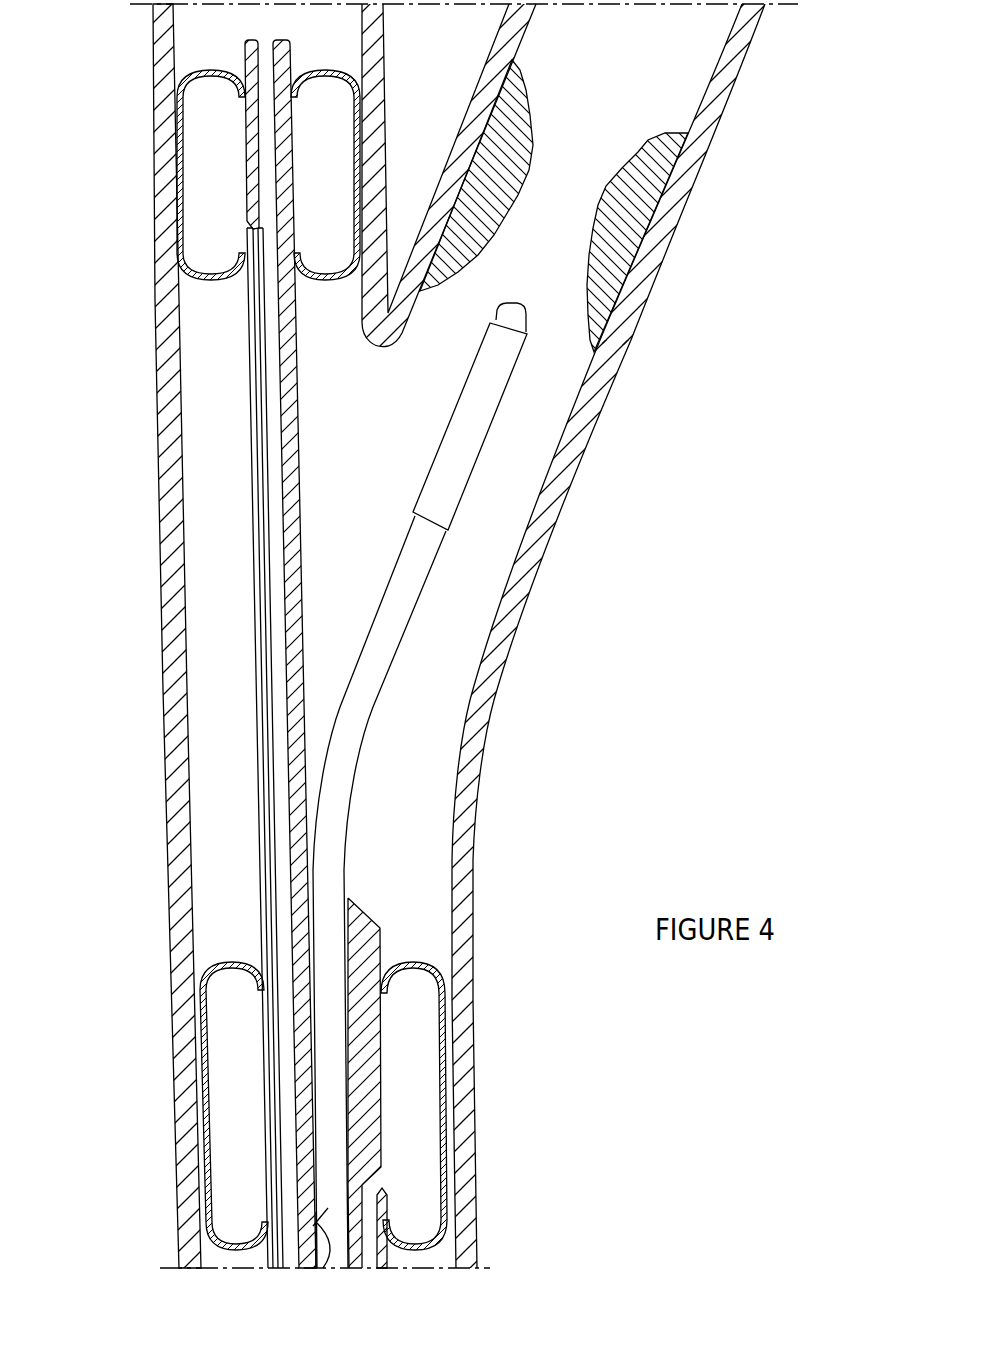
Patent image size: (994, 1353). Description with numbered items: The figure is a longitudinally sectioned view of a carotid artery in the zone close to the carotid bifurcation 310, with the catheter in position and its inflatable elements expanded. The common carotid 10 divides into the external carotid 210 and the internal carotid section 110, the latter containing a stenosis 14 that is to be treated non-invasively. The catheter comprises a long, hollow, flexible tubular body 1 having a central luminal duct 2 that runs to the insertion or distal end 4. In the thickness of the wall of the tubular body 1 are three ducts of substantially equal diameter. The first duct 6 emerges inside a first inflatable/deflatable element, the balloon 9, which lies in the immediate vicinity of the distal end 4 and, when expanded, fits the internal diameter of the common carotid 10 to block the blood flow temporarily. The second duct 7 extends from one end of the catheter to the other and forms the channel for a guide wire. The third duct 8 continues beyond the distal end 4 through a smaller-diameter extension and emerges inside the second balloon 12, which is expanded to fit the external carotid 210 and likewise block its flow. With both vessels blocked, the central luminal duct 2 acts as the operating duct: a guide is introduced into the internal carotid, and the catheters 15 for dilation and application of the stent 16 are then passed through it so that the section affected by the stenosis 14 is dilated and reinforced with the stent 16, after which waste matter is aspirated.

The tubular body 1 is at (390, 1257).
The central luminal duct 2 is at (327, 1268).
The distal end 4 is at (358, 910).
The first duct 6 is at (367, 1250).
The second duct 7 is at (267, 60).
The third duct 8 is at (253, 385).
The first inflatable/deflatable element (balloon) 9 is at (427, 1045).
The common carotid 10 is at (474, 1123).
The second inflatable/deflatable element (balloon) 12 is at (196, 68).
The stenosis 14 is at (634, 237).
The catheters for dilation and application of the stent 15 is at (375, 702).
The stent 16 is at (455, 418).
The internal carotid section 110 is at (697, 172).
The external carotid 210 is at (155, 208).
The carotid bifurcation 310 is at (400, 282).